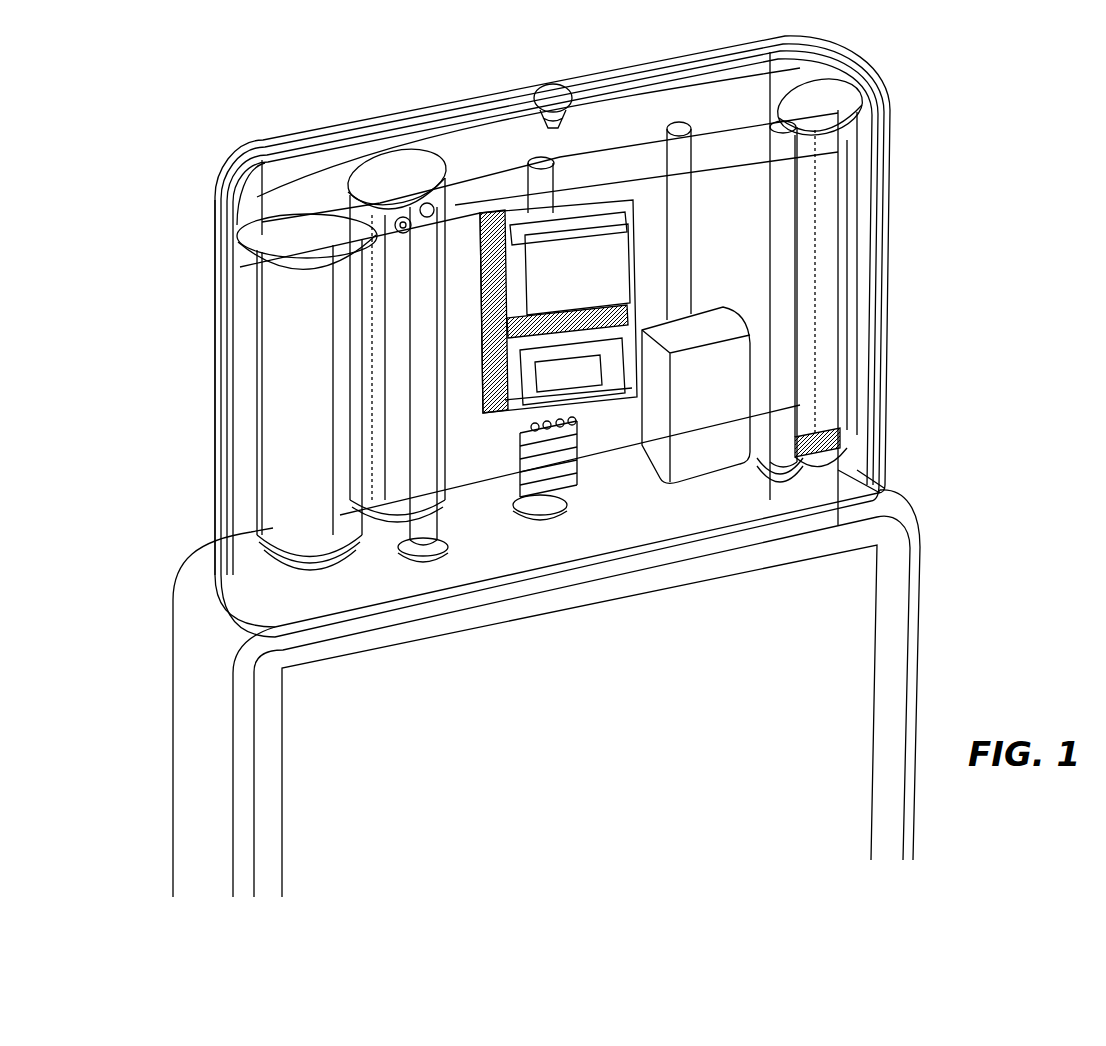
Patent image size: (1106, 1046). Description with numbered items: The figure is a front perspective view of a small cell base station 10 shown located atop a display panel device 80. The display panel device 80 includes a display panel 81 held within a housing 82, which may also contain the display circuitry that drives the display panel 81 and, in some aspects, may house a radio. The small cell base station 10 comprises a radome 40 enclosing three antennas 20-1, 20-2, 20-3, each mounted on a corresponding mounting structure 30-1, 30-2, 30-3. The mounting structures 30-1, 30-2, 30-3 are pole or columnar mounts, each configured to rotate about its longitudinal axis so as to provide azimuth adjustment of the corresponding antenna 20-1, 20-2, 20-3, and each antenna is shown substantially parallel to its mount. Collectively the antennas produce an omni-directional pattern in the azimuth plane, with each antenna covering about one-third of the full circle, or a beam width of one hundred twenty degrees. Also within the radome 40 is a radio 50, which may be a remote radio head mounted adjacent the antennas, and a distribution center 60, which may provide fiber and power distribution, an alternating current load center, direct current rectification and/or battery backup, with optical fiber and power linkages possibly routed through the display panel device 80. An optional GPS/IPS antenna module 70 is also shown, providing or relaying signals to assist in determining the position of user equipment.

The small cell base station 10 is at (158, 103).
The antenna 20-1 is at (290, 436).
The antenna 20-2 is at (390, 173).
The antenna 20-3 is at (853, 252).
The mounting structure 30-1 is at (283, 563).
The mounting structure 30-2 is at (430, 275).
The mounting structure 30-3 is at (790, 250).
The radome 40 is at (213, 273).
The radio 50 is at (602, 200).
The distribution center 60 is at (726, 413).
The GPS/IPS antenna module 70 is at (545, 85).
The display panel device 80 is at (623, 683).
The display panel 81 is at (850, 657).
The housing 82 is at (917, 678).